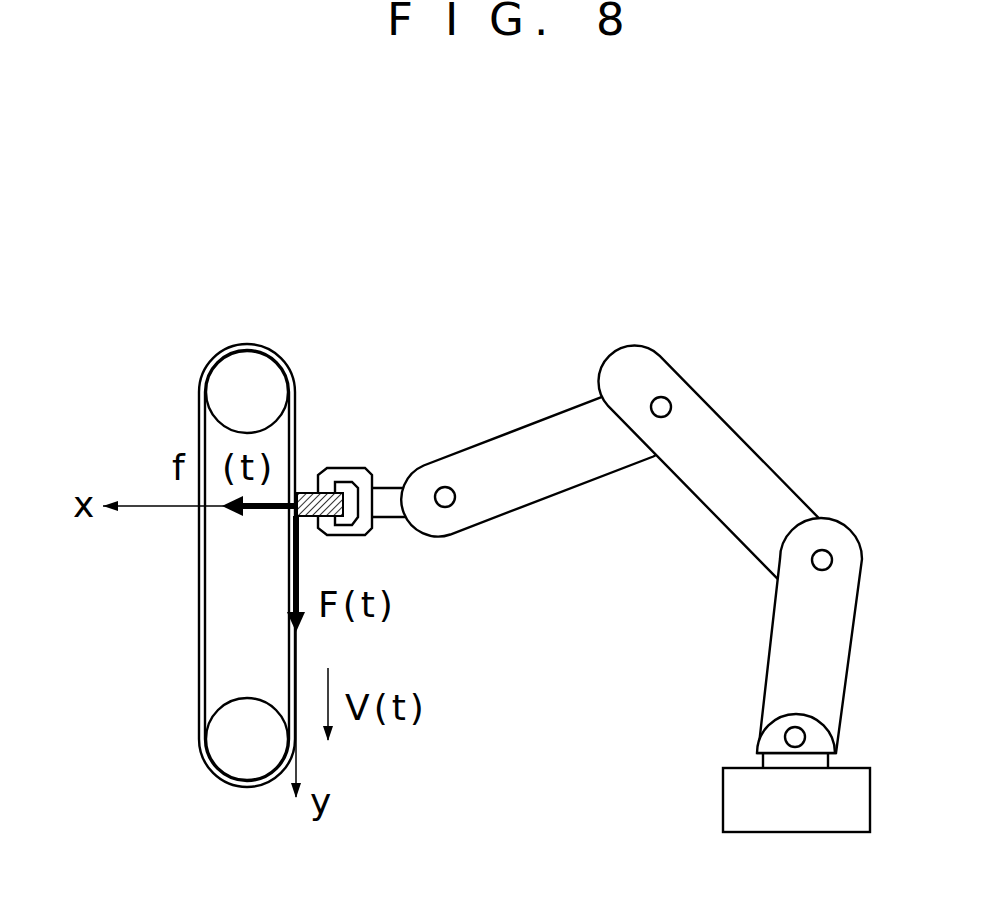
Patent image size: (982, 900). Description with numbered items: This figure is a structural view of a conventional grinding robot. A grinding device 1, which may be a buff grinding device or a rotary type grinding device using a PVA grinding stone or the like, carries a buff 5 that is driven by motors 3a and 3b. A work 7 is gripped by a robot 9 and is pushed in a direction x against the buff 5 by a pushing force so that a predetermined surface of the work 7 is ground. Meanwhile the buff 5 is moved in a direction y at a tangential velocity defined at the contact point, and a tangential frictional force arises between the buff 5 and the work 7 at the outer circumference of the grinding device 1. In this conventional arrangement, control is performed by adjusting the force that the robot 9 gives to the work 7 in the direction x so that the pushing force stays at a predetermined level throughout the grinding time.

The grinding device 1 is at (173, 523).
The motor 3a is at (227, 753).
The motor 3b is at (227, 377).
The buff 5 is at (200, 433).
The work 7 is at (305, 492).
The robot 9 is at (542, 418).